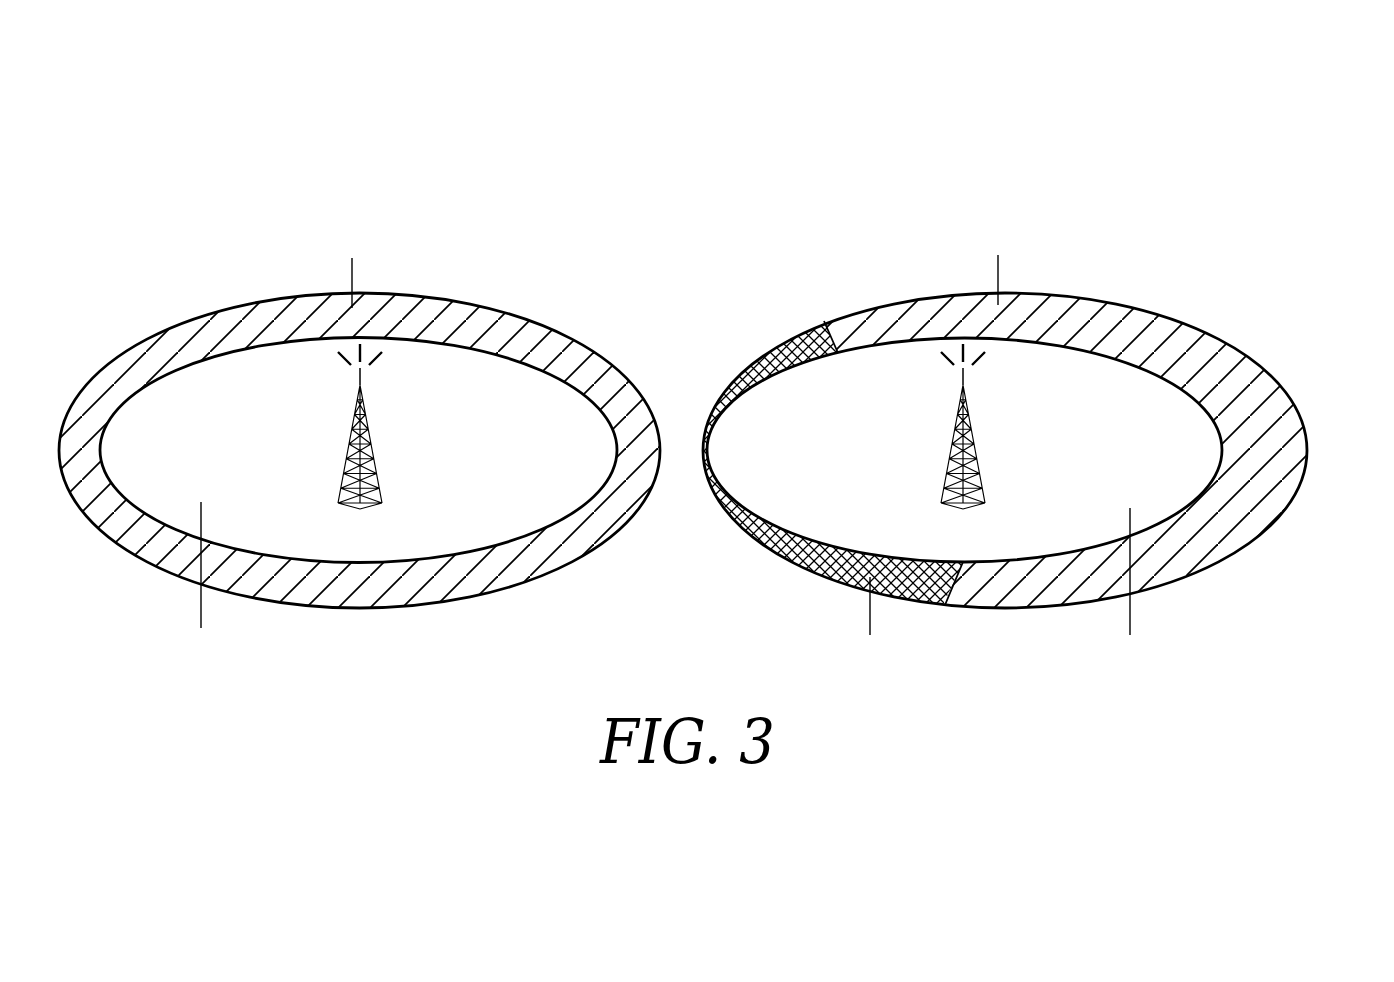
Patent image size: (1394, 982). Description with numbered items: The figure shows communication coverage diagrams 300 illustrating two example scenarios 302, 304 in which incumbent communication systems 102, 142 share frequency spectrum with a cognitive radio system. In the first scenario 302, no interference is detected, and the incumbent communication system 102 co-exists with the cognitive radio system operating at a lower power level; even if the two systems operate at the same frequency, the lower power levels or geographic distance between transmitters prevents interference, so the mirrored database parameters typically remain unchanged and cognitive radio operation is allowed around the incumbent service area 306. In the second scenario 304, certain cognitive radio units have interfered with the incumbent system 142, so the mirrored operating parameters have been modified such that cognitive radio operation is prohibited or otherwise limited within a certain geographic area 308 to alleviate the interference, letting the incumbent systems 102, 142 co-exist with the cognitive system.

The spectrum usage scenarios diagram 300 is at (1393, 93).
The first scenario 302 is at (508, 315).
The second scenario 304 is at (1152, 313).
The first incumbent service area 306 is at (118, 488).
The geographic area 308 is at (708, 470).
The incumbent communication system 102 is at (373, 443).
The incumbent communication system 142 is at (975, 443).